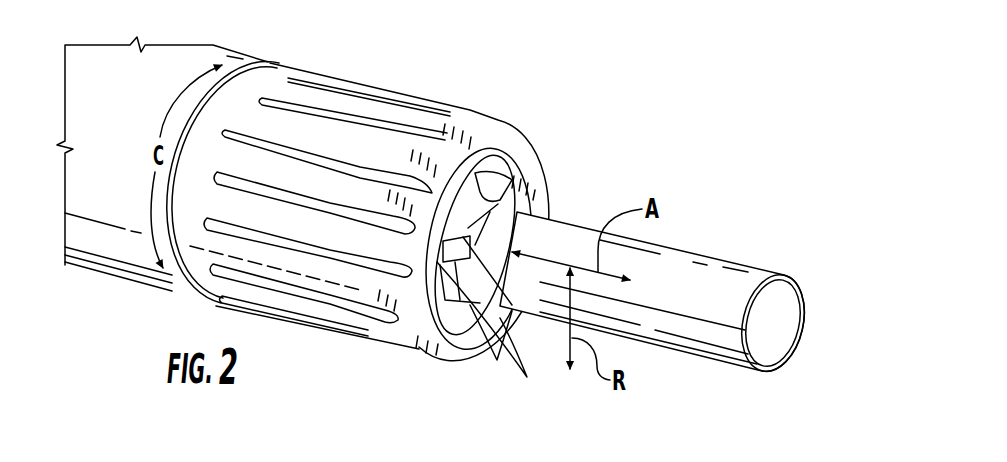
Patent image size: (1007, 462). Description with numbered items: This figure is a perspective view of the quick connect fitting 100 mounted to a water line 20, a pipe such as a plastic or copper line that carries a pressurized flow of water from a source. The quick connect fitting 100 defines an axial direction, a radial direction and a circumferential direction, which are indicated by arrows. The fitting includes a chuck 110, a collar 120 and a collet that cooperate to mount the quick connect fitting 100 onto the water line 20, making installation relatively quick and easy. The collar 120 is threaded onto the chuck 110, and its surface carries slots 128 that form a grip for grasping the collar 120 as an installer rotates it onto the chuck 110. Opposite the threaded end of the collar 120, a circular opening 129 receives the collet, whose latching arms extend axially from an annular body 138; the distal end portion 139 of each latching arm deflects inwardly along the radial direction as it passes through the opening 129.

The quick connect fitting 100 is at (590, 82).
The chuck 110 is at (123, 260).
The collar 120 is at (396, 118).
The slots 128 is at (397, 246).
The opening 129 is at (428, 300).
The annular body 138 is at (506, 308).
The distal end portion 139 is at (518, 184).
The water line 20 is at (777, 312).